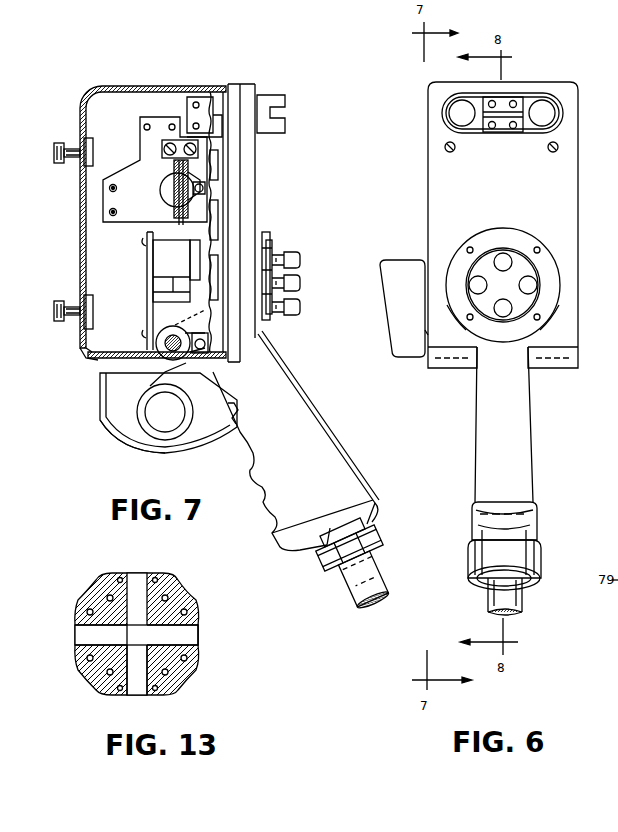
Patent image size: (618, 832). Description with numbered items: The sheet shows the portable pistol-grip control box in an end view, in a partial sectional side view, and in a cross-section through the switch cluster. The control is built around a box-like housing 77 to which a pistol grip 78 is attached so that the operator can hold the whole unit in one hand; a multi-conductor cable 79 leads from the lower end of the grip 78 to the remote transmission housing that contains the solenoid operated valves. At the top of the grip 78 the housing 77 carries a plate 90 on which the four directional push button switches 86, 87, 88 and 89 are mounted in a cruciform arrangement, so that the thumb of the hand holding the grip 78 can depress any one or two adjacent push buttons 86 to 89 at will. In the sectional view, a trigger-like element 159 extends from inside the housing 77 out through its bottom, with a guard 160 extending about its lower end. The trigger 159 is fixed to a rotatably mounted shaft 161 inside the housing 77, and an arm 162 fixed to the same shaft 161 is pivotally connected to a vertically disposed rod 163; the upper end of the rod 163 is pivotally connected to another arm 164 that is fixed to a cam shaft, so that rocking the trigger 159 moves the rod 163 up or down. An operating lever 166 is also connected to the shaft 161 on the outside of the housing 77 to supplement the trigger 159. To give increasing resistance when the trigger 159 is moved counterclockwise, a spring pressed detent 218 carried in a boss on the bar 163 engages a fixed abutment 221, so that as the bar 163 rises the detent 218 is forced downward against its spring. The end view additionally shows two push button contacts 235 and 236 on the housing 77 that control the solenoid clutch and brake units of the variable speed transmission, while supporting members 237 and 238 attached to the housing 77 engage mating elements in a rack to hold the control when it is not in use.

In FIG. 7, the box-like housing 77 is at (80, 224).
In FIG. 6, the box-like housing 77 is at (506, 188).
In FIG. 7, the pistol grip 78 is at (305, 478).
In FIG. 6, the pistol grip 78 is at (508, 430).
In FIG. 7, the multi-conductor cable 79 is at (380, 590).
In FIG. 6, the multi-conductor cable 79 is at (516, 594).
In FIG. 7, the push button switch 86 is at (294, 256).
In FIG. 6, the push button switch 86 is at (500, 255).
In FIG. 13, the push button switch 86 is at (136, 585).
In FIG. 7, the push button switch 87 is at (292, 312).
In FIG. 6, the push button switch 87 is at (506, 310).
In FIG. 13, the push button switch 87 is at (137, 684).
In FIG. 7, the push button switch 88 is at (298, 284).
In FIG. 6, the push button switch 88 is at (476, 284).
In FIG. 13, the push button switch 88 is at (190, 632).
In FIG. 6, the push button switch 89 is at (530, 284).
In FIG. 13, the push button switch 89 is at (82, 632).
In FIG. 6, the plate 90 is at (514, 236).
In FIG. 7, the trigger-like element 159 is at (152, 393).
In FIG. 7, the guard 160 is at (157, 452).
In FIG. 7, the rotatably mounted shaft 161 is at (163, 345).
In FIG. 7, the arm 162 is at (172, 328).
In FIG. 7, the vertically disposed rod 163 is at (194, 268).
In FIG. 7, the arm 164 is at (166, 192).
In FIG. 6, the operating lever 166 is at (412, 260).
In FIG. 7, the spring pressed detent 218 is at (173, 166).
In FIG. 7, the fixed abutment 221 is at (162, 147).
In FIG. 6, the push button contact 235 is at (458, 113).
In FIG. 6, the push button contact 236 is at (548, 113).
In FIG. 7, the supporting member 237 is at (64, 143).
In FIG. 7, the supporting member 238 is at (64, 302).